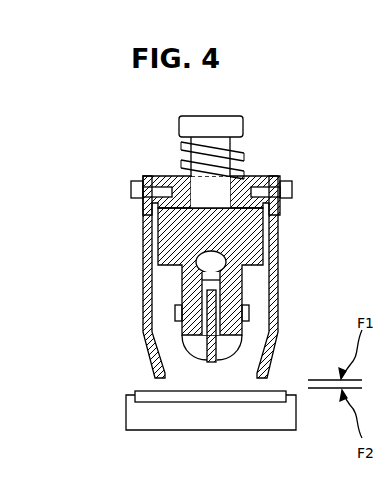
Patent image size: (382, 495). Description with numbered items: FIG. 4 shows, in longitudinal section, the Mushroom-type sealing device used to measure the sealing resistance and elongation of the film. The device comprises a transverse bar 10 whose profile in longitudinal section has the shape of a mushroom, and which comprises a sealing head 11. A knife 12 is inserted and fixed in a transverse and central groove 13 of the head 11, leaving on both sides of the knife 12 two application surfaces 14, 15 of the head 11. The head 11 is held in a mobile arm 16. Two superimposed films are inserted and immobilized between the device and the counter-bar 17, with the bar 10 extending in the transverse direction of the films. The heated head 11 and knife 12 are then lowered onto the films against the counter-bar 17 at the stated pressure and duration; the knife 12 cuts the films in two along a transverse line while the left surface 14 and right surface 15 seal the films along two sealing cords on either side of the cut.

The transverse bar 10 is at (205, 288).
The sealing head 11 is at (228, 342).
The knife 12 is at (208, 363).
The transverse and central groove 13 is at (214, 358).
The left application surface 14 is at (181, 361).
The right application surface 15 is at (241, 361).
The mobile arm 16 is at (214, 192).
The counter-bar 17 is at (208, 396).